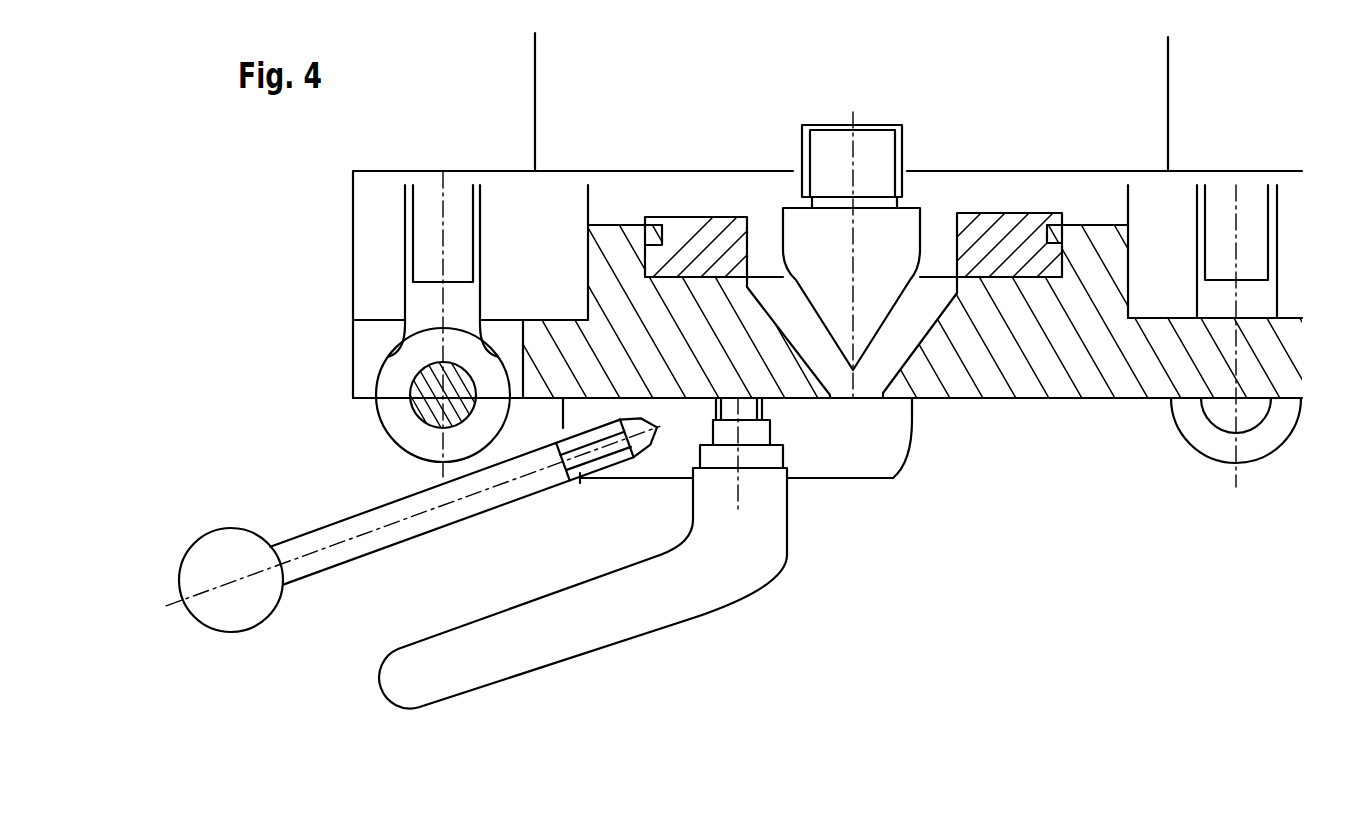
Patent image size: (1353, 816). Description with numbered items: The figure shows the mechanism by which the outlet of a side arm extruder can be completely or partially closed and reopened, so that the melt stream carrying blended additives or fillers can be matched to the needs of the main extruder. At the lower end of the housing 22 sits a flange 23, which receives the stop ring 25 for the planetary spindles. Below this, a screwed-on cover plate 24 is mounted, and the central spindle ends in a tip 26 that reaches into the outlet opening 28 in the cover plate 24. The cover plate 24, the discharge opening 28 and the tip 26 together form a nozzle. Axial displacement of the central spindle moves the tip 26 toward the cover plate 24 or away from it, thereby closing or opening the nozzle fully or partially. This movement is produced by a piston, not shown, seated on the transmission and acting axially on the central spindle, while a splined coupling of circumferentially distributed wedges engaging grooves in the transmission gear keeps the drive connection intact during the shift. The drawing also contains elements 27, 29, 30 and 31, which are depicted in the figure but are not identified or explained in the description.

The housing 22 is at (535, 107).
The flange 23 is at (383, 195).
The cover plate 24 is at (1133, 350).
The stop ring 25 is at (1014, 255).
The tip 26 is at (883, 280).
The pivot pin 27 is at (393, 405).
The outlet opening 28 is at (862, 398).
The lever hub 29 is at (648, 462).
The hand lever 30 is at (485, 497).
The lever housing 31 is at (752, 555).